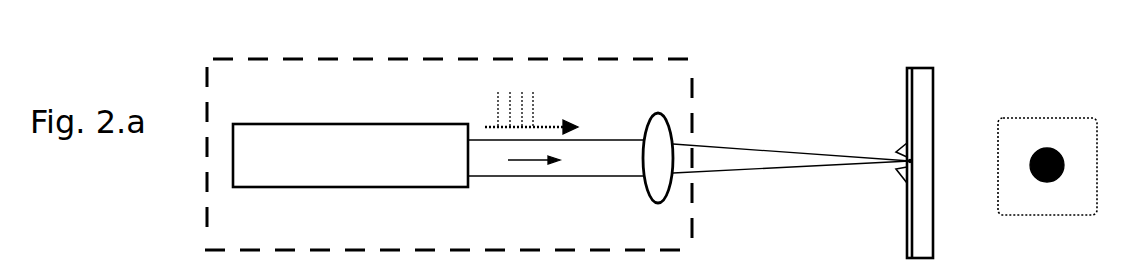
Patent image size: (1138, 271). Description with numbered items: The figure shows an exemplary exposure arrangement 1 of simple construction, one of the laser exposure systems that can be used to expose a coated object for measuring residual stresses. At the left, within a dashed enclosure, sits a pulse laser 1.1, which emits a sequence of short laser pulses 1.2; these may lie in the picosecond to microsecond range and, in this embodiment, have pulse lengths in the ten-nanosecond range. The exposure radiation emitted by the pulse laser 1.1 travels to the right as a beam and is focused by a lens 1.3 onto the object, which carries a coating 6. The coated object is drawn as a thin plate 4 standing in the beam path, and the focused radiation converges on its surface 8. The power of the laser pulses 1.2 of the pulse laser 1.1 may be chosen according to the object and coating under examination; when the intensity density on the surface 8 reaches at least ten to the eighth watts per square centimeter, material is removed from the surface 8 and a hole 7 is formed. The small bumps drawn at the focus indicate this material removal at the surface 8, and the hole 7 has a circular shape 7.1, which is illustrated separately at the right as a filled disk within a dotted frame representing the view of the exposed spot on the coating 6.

The exposure arrangement 1 is at (337, 55).
The pulse laser 1.1 is at (340, 124).
The laser pulses 1.2 is at (533, 92).
The lens 1.3 is at (647, 125).
The substrate plate 4 is at (922, 65).
The coating 6 is at (907, 232).
The hole 7 is at (910, 162).
The circular shape 7.1 is at (1055, 147).
The surface 8 is at (905, 143).